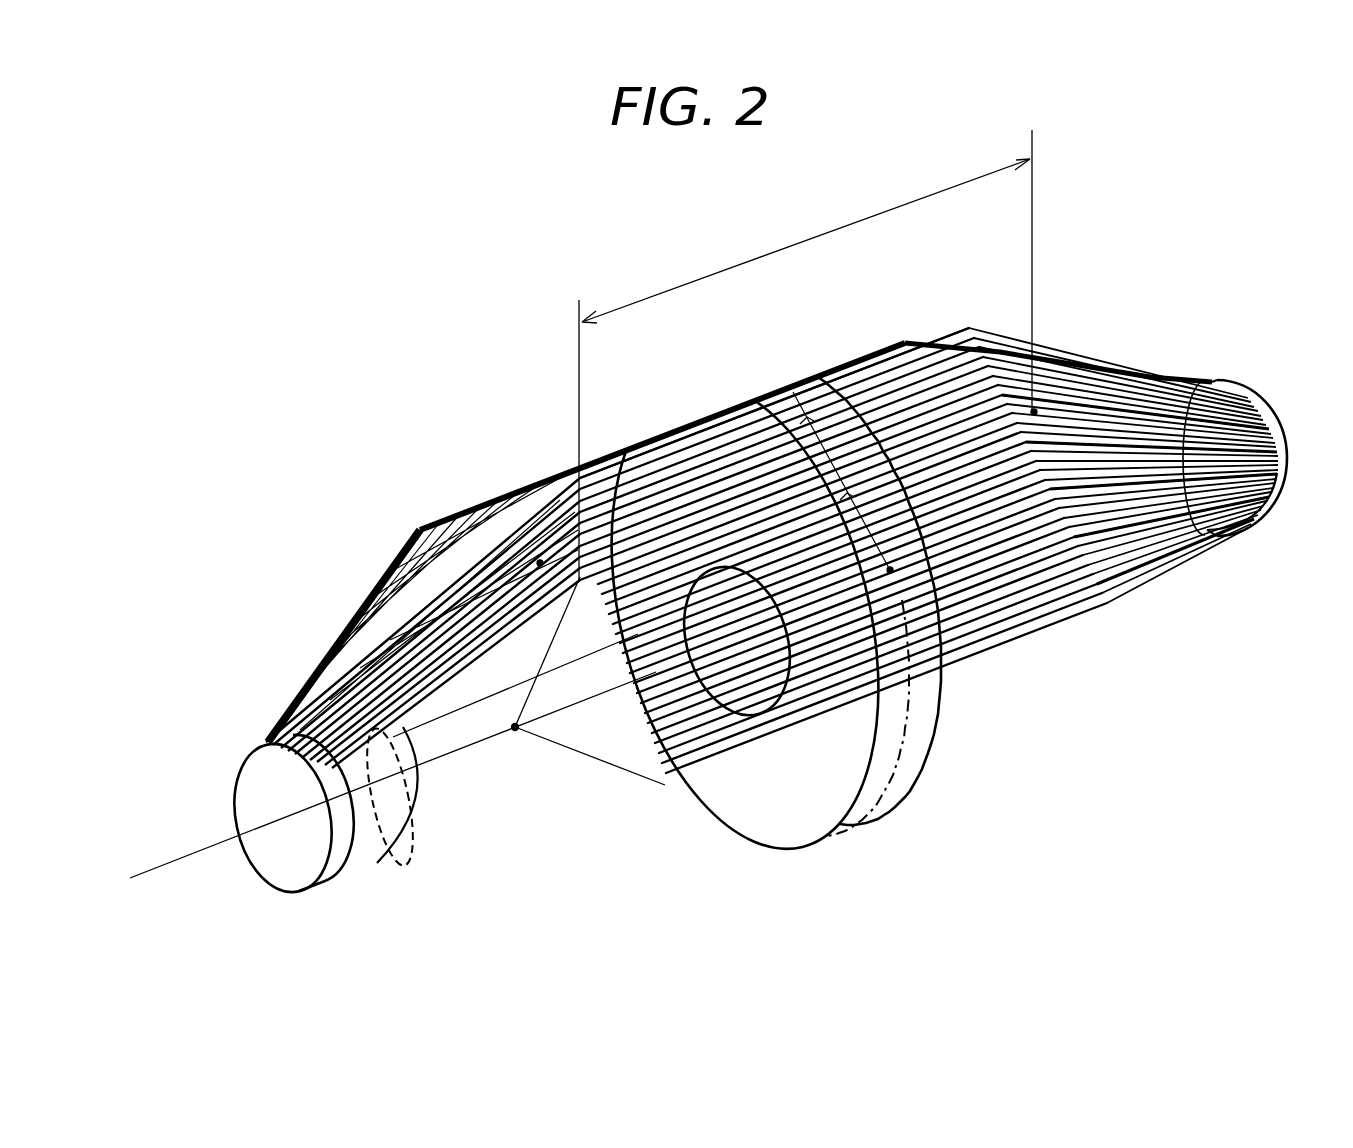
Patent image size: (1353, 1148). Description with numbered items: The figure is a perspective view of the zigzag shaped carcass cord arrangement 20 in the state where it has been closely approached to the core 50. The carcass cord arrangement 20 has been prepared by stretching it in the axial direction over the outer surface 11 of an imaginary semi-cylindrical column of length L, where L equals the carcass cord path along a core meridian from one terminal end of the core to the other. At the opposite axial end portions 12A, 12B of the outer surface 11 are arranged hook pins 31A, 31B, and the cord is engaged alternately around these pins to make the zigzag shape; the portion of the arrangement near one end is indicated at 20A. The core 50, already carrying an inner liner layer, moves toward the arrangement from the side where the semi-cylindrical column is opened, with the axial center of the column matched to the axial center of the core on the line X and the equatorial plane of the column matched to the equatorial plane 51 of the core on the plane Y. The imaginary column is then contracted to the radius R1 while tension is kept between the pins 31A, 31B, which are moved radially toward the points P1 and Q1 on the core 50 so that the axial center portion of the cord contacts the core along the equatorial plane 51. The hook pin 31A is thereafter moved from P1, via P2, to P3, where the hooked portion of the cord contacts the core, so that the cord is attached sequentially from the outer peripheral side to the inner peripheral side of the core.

The outer surface 11 is at (691, 424).
The axial end portion 12A is at (487, 503).
The axial end portion 12B is at (1131, 374).
The carcass cord arrangement 20 is at (863, 358).
The fanned fiber portion 20A is at (604, 460).
The hook pin 31A is at (553, 490).
The hook pin 31B is at (1058, 372).
The core 50 is at (857, 737).
The equatorial plane 51 is at (777, 388).
The point P1 is at (540, 562).
The point P2 is at (767, 505).
The point P3 is at (657, 732).
The point Q1 is at (1086, 366).
The radius R1 is at (546, 678).
The line X is at (390, 756).
The plane Y is at (890, 570).
The length L is at (806, 241).